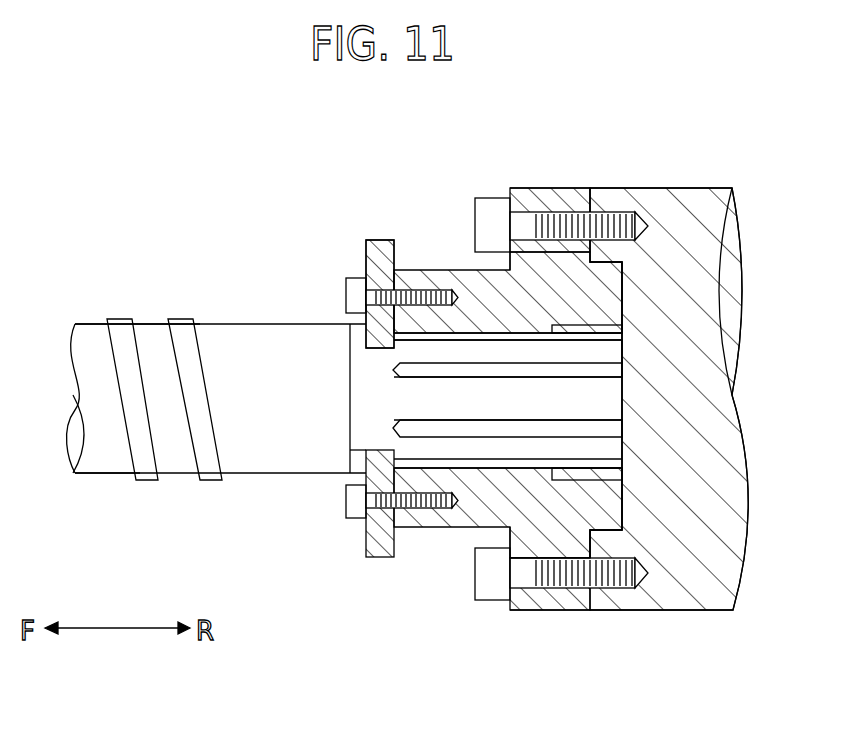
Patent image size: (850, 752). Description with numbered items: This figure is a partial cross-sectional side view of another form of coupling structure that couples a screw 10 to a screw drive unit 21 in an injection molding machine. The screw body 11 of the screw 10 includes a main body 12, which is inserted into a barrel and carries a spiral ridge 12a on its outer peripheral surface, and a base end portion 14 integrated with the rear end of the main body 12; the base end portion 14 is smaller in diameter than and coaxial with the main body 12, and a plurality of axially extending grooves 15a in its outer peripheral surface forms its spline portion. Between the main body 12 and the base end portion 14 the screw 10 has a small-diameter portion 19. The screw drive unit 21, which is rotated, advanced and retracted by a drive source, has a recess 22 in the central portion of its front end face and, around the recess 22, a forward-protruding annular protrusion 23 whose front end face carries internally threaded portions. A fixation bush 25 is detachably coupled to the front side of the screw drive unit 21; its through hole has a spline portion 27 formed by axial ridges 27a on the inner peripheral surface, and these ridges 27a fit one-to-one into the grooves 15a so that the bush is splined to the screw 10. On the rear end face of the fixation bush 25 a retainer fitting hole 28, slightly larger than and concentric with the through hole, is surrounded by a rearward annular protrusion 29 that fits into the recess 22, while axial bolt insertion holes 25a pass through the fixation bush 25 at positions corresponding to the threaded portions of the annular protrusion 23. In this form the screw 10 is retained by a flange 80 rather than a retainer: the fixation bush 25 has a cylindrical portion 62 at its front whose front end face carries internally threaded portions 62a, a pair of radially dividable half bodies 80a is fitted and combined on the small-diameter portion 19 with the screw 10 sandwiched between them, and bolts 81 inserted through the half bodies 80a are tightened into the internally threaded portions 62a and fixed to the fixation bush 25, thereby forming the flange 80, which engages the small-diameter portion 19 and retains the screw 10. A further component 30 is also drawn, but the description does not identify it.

The screw 10 is at (80, 312).
The screw body 11 is at (107, 475).
The main body 12 is at (213, 322).
The spiral ridge 12a is at (118, 318).
The base end portion 14 is at (560, 408).
The grooves 15a is at (580, 370).
The small-diameter portion 19 is at (366, 457).
The screw drive unit 21 is at (655, 188).
The recess 22 is at (613, 502).
The annular protrusion 23 is at (607, 537).
The fixation bush 25 is at (540, 188).
The bolt insertion holes 25a is at (527, 212).
The spline portion 27 is at (510, 350).
The ridges 27a is at (430, 333).
The retainer fitting hole 28 is at (598, 488).
The annular protrusion 29 is at (623, 290).
The bolt head 30 is at (492, 198).
The cylindrical portion 62 is at (460, 270).
The internally threaded portions 62a is at (410, 290).
The flange 80 is at (388, 226).
The half bodies 80a is at (375, 240).
The bolts 81 is at (355, 278).